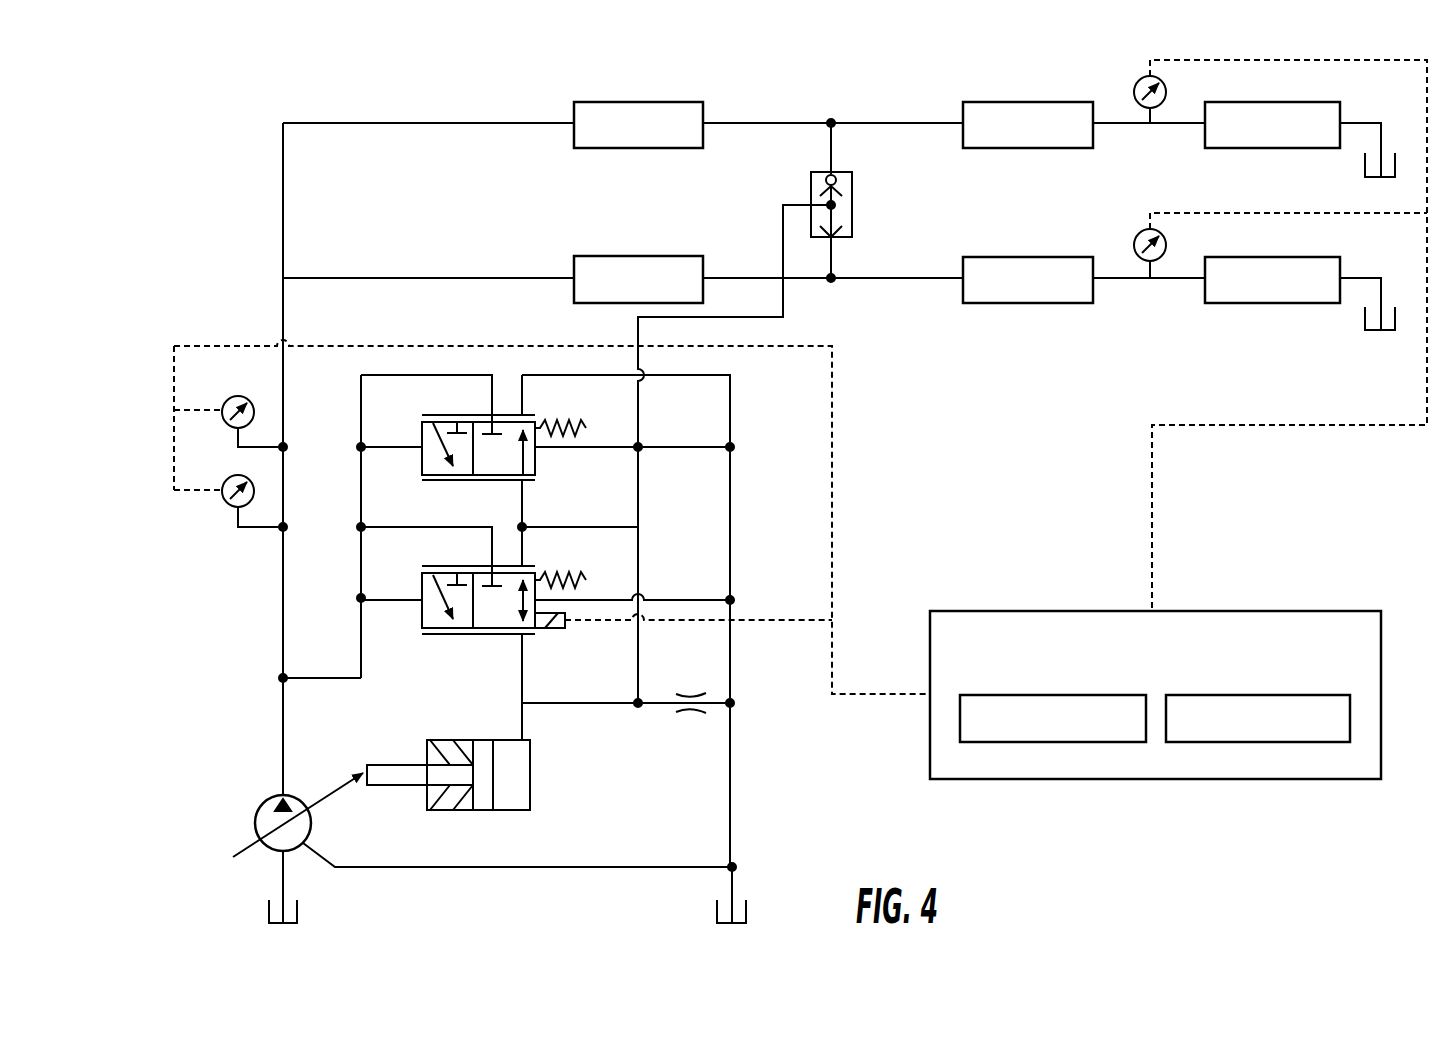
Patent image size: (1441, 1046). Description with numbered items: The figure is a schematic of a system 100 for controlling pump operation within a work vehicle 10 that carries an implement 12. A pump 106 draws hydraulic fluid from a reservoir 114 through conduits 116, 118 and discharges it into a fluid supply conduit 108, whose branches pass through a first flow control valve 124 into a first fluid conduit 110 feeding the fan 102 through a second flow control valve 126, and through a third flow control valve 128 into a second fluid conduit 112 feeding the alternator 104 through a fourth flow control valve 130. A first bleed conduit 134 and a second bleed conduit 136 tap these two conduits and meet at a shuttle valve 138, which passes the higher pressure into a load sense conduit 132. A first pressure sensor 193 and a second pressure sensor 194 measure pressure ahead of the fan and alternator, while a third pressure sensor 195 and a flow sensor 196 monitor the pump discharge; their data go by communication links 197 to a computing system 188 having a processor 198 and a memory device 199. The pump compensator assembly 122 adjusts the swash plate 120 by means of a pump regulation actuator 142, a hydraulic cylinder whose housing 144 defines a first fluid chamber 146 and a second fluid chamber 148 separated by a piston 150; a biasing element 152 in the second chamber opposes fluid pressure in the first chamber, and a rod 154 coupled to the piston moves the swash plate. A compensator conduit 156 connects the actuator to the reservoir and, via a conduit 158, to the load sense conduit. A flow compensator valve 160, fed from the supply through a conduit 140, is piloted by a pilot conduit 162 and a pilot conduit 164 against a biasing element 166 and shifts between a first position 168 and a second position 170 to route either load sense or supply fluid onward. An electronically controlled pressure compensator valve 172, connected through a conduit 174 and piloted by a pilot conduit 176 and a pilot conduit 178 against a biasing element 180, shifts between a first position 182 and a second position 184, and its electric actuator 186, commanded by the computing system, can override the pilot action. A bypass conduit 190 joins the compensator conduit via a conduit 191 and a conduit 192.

The system 100 is at (146, 126).
The work vehicle 10 is at (203, 270).
The implement 12 is at (1035, 365).
The fan 102 is at (1256, 148).
The alternator 104 is at (1256, 303).
The pump 106 is at (258, 790).
The fluid supply conduit 108 is at (283, 620).
The first fluid conduit 110 is at (441, 122).
The second fluid conduit 112 is at (441, 277).
The reservoir 114 is at (1382, 178).
The conduit 116 is at (290, 875).
The conduit 118 is at (420, 870).
The swash plate 120 is at (248, 840).
The pump compensator assembly 122 is at (626, 750).
The first flow control valve 124 is at (631, 102).
The second flow control valve 126 is at (1021, 102).
The third flow control valve 128 is at (631, 256).
The fourth flow control valve 130 is at (1021, 257).
The load sense conduit 132 is at (783, 292).
The first bleed conduit 134 is at (832, 162).
The second bleed conduit 136 is at (832, 243).
The shuttle valve 138 is at (811, 185).
The conduit 140 is at (361, 428).
The pump regulation actuator 142 is at (381, 750).
The housing 144 is at (535, 775).
The first fluid chamber 146 is at (516, 810).
The second fluid chamber 148 is at (443, 745).
The piston 150 is at (480, 810).
The biasing element 152 is at (440, 800).
The rod 154 is at (395, 788).
The compensator conduit 156 is at (735, 420).
The conduit 158 is at (680, 452).
The flow compensator valve 160 is at (446, 412).
The pilot conduit 162 is at (382, 452).
The pilot conduit 164 is at (600, 452).
The biasing element 166 is at (562, 421).
The first position 168 is at (506, 482).
The second position 170 is at (441, 482).
The electronically controlled pressure compensator valve 172 is at (456, 648).
The conduit 174 is at (382, 533).
The pilot conduit 176 is at (382, 605).
The pilot conduit 178 is at (598, 592).
The biasing element 180 is at (548, 572).
The first position 182 is at (483, 628).
The second position 184 is at (437, 630).
The electric actuator 186 is at (550, 633).
The computing system 188 is at (1022, 611).
The bypass conduit 190 is at (645, 565).
The conduit 191 is at (660, 702).
The conduit 192 is at (598, 702).
The first pressure sensor 193 is at (1136, 84).
The second pressure sensor 194 is at (1136, 237).
The third pressure sensor 195 is at (226, 500).
The flow sensor 196 is at (241, 396).
The communicative link 197 is at (832, 422).
The processor 198 is at (1040, 745).
The memory device 199 is at (1245, 745).